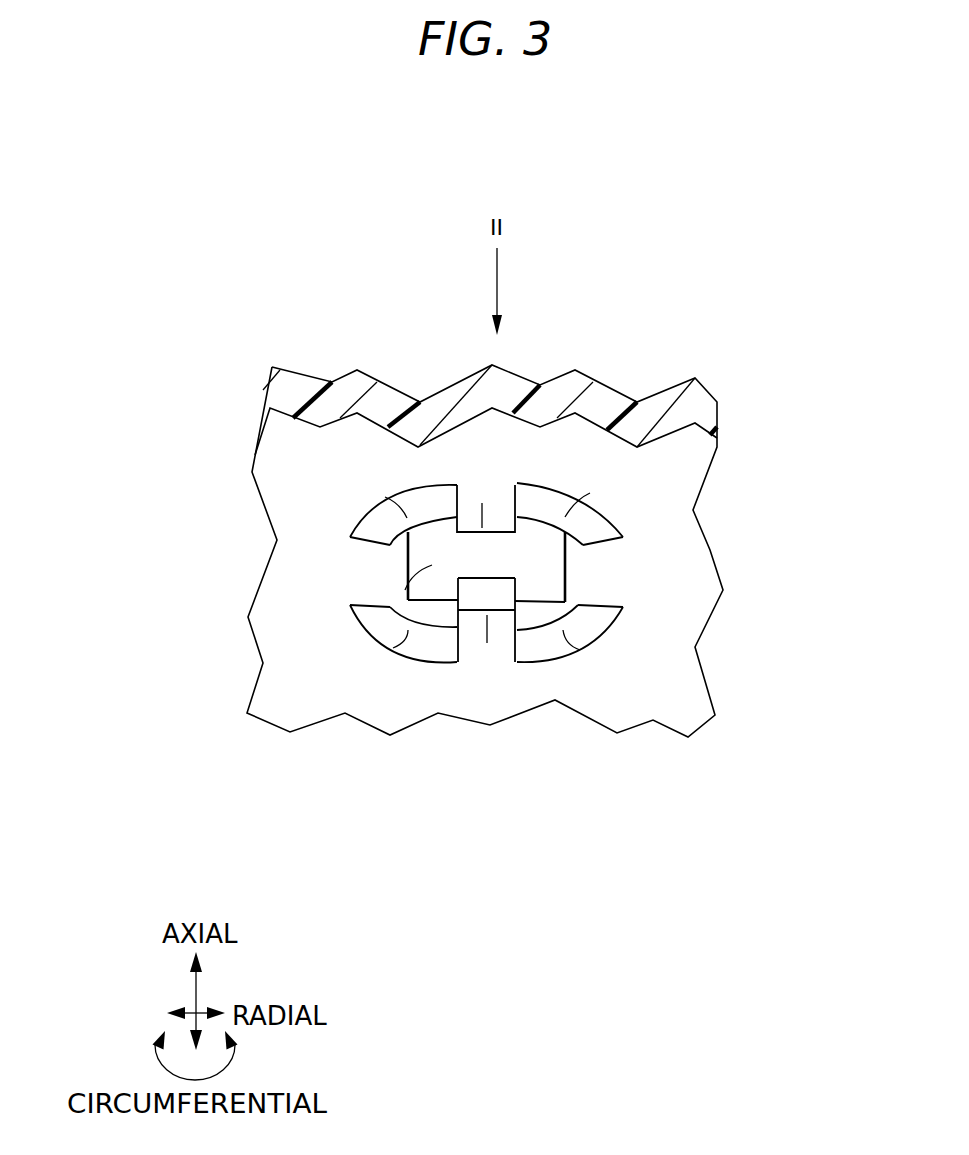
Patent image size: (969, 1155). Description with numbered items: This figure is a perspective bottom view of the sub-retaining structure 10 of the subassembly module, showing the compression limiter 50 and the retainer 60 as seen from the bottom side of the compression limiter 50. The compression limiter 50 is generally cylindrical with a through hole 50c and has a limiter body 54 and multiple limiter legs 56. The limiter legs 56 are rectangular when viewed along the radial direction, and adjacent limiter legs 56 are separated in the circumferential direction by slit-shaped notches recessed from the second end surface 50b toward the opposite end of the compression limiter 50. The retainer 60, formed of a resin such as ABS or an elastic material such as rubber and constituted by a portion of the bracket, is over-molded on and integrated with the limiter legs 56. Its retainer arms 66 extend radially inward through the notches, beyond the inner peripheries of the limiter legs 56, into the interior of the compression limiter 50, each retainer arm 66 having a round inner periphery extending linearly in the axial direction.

The sub-retaining structure 10 is at (825, 429).
The compression limiter 50 is at (503, 571).
The second end surface 50b is at (422, 503).
The through hole 50c is at (403, 588).
The limiter body 54 is at (540, 542).
The limiter legs 56 is at (410, 508).
The retainer 60 is at (597, 454).
The retainer arms 66 is at (481, 503).